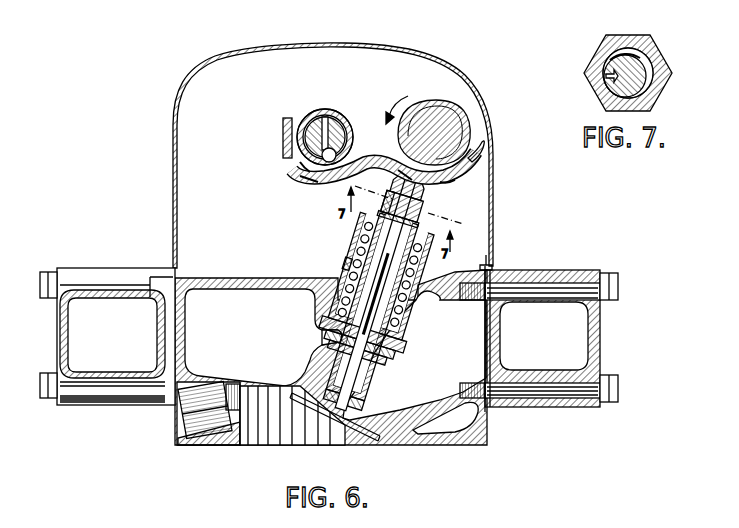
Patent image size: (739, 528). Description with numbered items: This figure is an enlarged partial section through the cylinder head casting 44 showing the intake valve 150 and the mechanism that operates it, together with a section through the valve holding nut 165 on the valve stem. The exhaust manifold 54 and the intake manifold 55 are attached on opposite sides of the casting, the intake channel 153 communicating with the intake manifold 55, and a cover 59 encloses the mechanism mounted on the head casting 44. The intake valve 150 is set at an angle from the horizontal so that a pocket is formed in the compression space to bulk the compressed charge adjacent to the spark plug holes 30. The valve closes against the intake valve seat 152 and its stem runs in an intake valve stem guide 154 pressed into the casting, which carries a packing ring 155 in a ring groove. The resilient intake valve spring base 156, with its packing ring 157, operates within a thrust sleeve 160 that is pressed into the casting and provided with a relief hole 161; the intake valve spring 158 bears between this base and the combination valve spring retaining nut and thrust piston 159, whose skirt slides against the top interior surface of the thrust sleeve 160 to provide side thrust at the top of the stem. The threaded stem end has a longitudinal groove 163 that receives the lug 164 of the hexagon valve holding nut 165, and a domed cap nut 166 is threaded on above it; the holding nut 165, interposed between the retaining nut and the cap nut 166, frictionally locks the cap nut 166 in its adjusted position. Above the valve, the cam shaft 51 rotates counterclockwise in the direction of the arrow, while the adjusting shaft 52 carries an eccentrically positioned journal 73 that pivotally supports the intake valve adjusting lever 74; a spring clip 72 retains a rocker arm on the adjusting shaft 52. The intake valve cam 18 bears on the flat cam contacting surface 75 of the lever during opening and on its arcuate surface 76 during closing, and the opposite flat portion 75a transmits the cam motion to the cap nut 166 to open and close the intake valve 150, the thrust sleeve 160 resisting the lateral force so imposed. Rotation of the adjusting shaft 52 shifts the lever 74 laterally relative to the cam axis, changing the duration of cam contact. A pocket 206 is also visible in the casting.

In FIG. 6, the cam 18 is at (455, 118).
In FIG. 6, the spark plug holes 30 is at (180, 425).
In FIG. 6, the cylinder head casting 44 is at (290, 279).
In FIG. 6, the cam shaft 51 is at (446, 100).
In FIG. 6, the adjusting shaft 52 is at (312, 185).
In FIG. 6, the exhaust manifold 54 is at (64, 334).
In FIG. 6, the intake manifold 55 is at (602, 332).
In FIG. 6, the cover 59 is at (173, 173).
In FIG. 6, the spring clip 72 is at (283, 134).
In FIG. 6, the eccentrically positioned journals 73 is at (312, 112).
In FIG. 6, the intake valve adjusting lever 74 is at (300, 165).
In FIG. 6, the flat cam contacting surface 75 is at (397, 153).
In FIG. 6, the flat portion 75a is at (398, 175).
In FIG. 6, the arcuate surface 76 is at (470, 160).
In FIG. 6, the intake valve 150 is at (343, 443).
In FIG. 7, the intake valve 150 is at (660, 58).
In FIG. 6, the intake valve seat 152 is at (372, 424).
In FIG. 6, the intake channel 153 is at (465, 342).
In FIG. 6, the intake valve stem guide 154 is at (362, 398).
In FIG. 6, the packing ring 155 is at (338, 272).
In FIG. 6, the intake valve spring base 156 is at (322, 301).
In FIG. 6, the packing ring 157 is at (324, 312).
In FIG. 6, the intake valve spring 158 is at (478, 266).
In FIG. 6, the combination valve spring retaining nut and thrust piston 159 is at (360, 220).
In FIG. 6, the thrust sleeve 160 is at (350, 252).
In FIG. 6, the relief hole 161 is at (343, 268).
In FIG. 6, the longitudinal groove 163 is at (396, 201).
In FIG. 6, the lug 164 is at (376, 188).
In FIG. 7, the lug 164 is at (598, 84).
In FIG. 6, the valve holding nut 165 is at (427, 210).
In FIG. 7, the valve holding nut 165 is at (603, 43).
In FIG. 6, the cap nut 166 is at (428, 191).
In FIG. 6, the drain pocket 206 is at (318, 333).